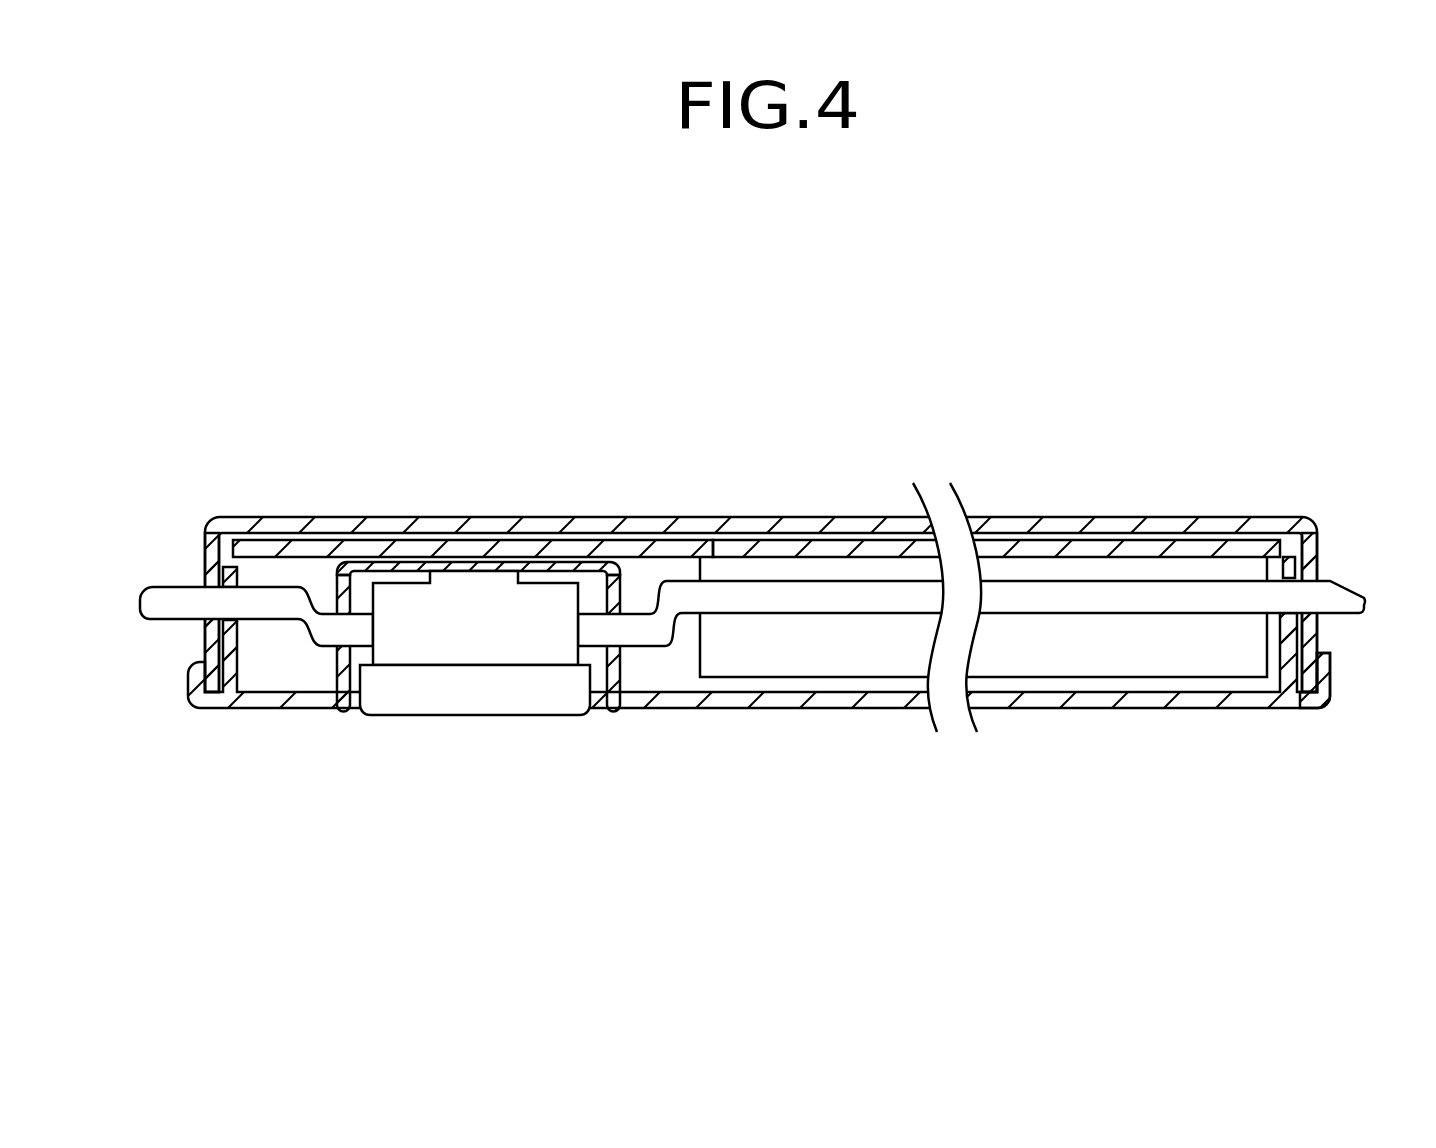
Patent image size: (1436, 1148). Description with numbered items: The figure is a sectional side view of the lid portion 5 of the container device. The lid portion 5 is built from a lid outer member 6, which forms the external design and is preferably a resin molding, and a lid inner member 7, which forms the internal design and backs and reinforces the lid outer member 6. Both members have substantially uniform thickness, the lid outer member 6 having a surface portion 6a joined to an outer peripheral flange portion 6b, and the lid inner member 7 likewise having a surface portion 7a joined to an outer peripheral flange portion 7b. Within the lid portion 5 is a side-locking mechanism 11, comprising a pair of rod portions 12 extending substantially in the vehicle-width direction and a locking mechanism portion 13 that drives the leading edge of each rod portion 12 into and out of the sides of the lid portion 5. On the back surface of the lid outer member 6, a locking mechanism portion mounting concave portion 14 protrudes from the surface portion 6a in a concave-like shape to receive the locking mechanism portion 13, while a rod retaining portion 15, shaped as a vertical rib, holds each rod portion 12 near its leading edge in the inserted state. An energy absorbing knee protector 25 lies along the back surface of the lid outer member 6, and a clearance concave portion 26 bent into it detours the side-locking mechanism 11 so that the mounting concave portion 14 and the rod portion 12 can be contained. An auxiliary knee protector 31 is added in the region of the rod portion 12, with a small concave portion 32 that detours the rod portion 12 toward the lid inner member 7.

The lid portion 5 is at (1030, 750).
The lid outer member 6 is at (801, 748).
The surface portion 6a is at (1248, 700).
The outer peripheral flange portion 6b is at (1351, 734).
The lid inner member 7 is at (814, 506).
The surface portion 7a is at (1278, 513).
The outer peripheral flange portion 7b is at (1357, 542).
The side-locking mechanism 11 is at (752, 666).
The rod portion 12 is at (323, 637).
The locking mechanism portion 13 is at (475, 707).
The locking mechanism portion mounting concave portion 14 is at (578, 565).
The rod retaining portion 15 is at (207, 541).
The energy absorbing knee protector 25 is at (300, 554).
The clearance concave portion 26 is at (473, 481).
The auxiliary knee protector 31 is at (800, 572).
The small concave portion 32 is at (996, 487).